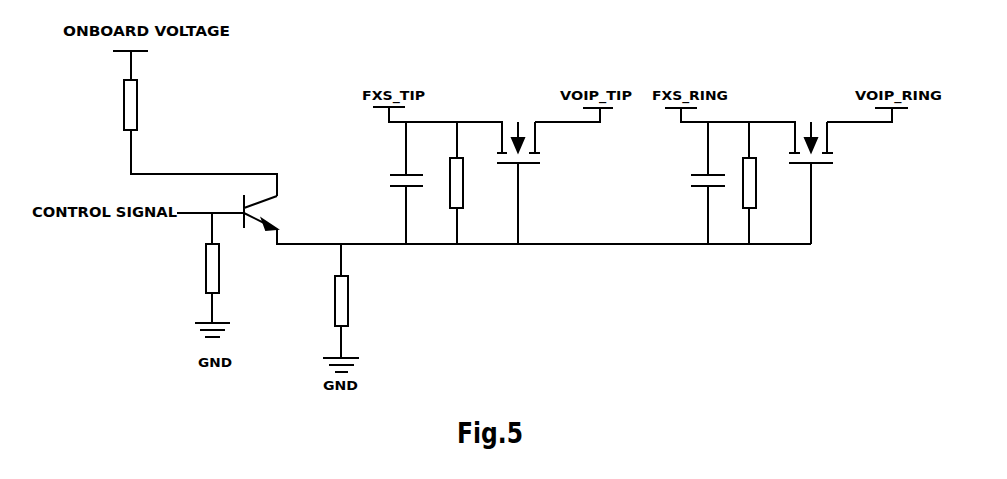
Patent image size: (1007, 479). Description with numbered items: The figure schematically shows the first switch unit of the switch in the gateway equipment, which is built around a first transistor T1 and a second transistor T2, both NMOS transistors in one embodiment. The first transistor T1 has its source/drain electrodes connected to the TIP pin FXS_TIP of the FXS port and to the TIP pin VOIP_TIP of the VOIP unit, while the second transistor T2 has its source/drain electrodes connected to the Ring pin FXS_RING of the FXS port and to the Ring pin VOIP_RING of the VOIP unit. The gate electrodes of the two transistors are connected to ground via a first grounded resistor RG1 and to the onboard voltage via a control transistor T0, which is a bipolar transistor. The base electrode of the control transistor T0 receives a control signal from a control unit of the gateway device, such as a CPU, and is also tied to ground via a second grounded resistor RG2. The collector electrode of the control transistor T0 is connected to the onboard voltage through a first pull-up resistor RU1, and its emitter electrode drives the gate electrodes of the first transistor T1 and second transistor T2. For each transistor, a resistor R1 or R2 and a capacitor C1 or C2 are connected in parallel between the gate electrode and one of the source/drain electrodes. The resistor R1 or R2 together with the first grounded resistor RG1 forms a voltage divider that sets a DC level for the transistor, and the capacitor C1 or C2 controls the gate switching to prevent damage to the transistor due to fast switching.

The first pull-up resistor RU1 is at (146, 105).
The second grounded resistor RG2 is at (228, 268).
The first grounded resistor RG1 is at (357, 301).
The control transistor T0 is at (273, 212).
The capacitor C1 is at (391, 183).
The resistor R1 is at (470, 183).
The first transistor T1 is at (532, 183).
The capacitor C2 is at (694, 183).
The resistor R2 is at (763, 183).
The second transistor T2 is at (823, 183).